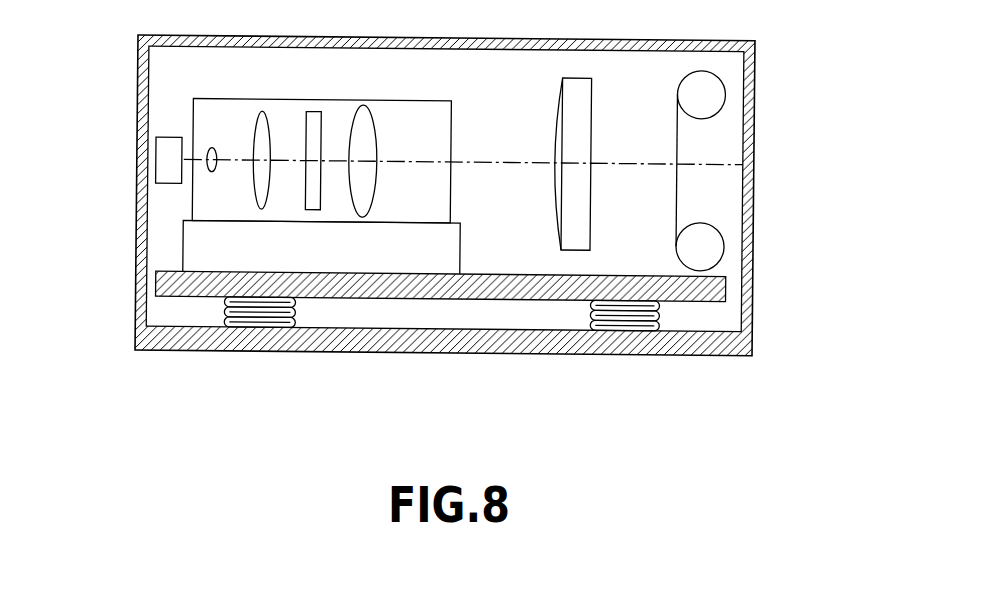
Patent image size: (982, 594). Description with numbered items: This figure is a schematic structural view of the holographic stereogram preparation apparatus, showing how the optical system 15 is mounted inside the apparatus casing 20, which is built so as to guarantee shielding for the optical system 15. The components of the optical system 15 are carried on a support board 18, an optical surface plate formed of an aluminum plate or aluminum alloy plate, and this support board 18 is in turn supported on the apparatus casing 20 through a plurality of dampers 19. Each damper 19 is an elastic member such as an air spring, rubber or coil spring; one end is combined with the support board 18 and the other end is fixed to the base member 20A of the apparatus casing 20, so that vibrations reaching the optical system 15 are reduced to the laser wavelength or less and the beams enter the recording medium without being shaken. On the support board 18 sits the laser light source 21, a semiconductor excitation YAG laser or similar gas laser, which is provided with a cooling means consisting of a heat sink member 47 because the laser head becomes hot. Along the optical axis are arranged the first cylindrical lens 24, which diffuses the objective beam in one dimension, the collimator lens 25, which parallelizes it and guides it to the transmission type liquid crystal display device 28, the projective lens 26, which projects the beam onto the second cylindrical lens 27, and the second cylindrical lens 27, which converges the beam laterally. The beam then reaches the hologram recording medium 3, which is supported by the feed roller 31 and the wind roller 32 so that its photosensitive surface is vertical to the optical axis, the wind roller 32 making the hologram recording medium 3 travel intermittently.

The hologram recording medium 3 is at (680, 190).
The optical system 15 is at (402, 122).
The support board 18 is at (514, 284).
The damper 19 is at (242, 319).
The apparatus casing 20 is at (137, 315).
The base member 20A is at (410, 350).
The laser light source 21 is at (162, 155).
The first cylindrical lens 24 is at (213, 147).
The collimator lens 25 is at (263, 129).
The projective lens 26 is at (375, 118).
The second cylindrical lens 27 is at (563, 96).
The liquid crystal display device 28 is at (317, 113).
The feed roller 31 is at (714, 243).
The wind roller 32 is at (712, 92).
The heat sink member 47 is at (188, 244).